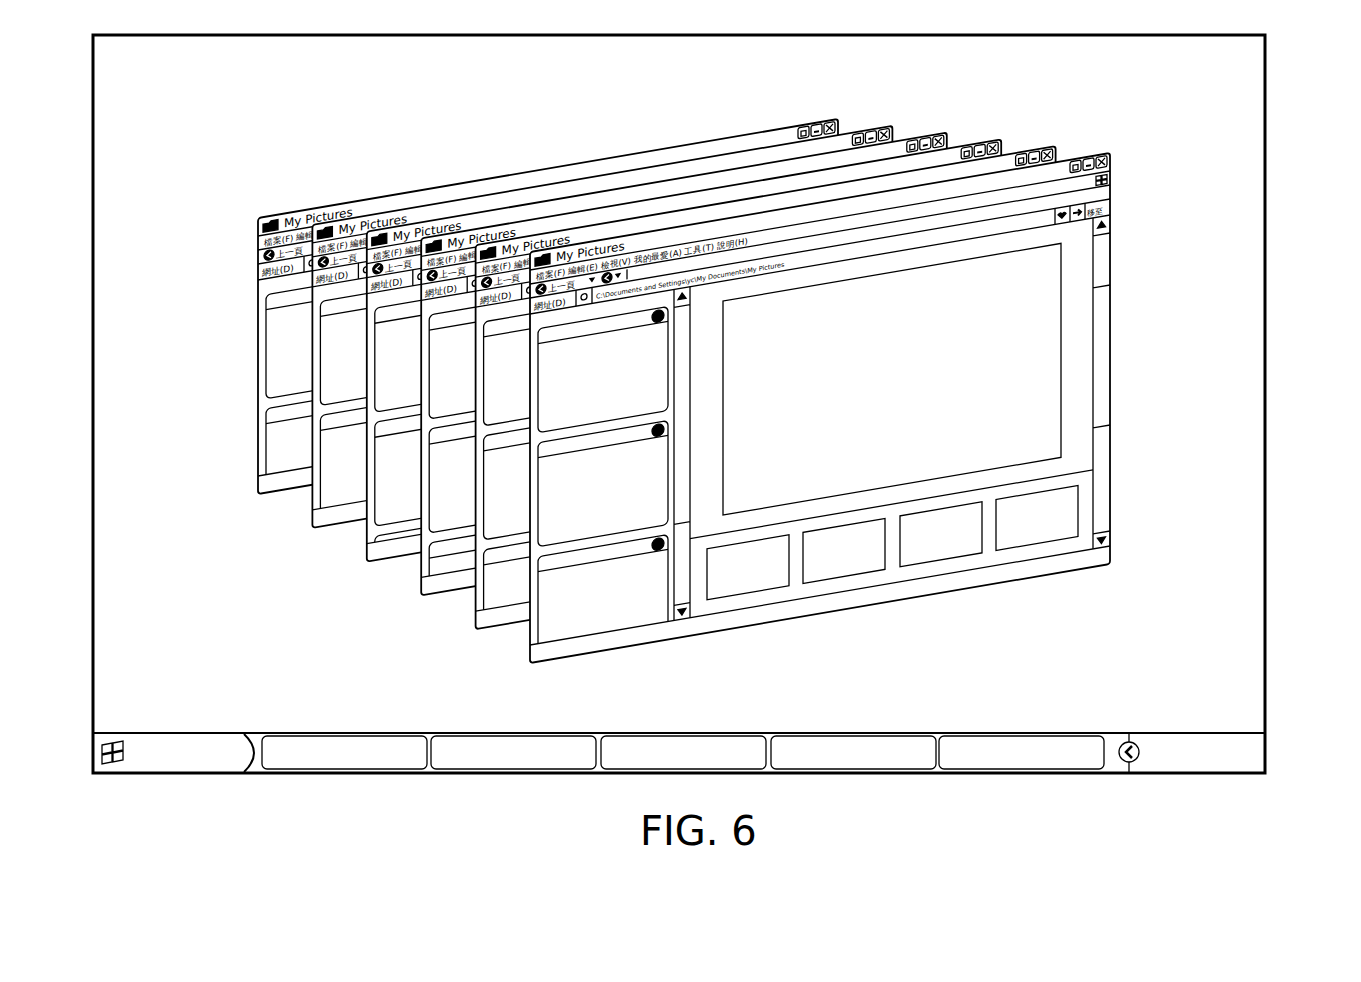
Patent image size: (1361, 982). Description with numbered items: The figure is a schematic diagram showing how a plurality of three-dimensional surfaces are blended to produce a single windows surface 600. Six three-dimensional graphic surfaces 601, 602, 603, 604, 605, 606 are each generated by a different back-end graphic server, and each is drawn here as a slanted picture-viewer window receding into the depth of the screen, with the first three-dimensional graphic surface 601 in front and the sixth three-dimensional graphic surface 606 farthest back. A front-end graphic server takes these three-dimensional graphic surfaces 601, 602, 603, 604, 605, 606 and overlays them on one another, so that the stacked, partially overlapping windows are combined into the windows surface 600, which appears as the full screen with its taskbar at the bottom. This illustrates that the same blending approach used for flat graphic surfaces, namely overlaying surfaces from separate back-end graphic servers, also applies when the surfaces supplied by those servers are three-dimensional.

The windows surface 600 is at (1266, 404).
The 3D graphic surface 601 is at (531, 660).
The 3D graphic surface 602 is at (477, 626).
The 3D graphic surface 603 is at (423, 592).
The 3D graphic surface 604 is at (368, 558).
The 3D graphic surface 605 is at (313, 524).
The 3D graphic surface 606 is at (258, 490).